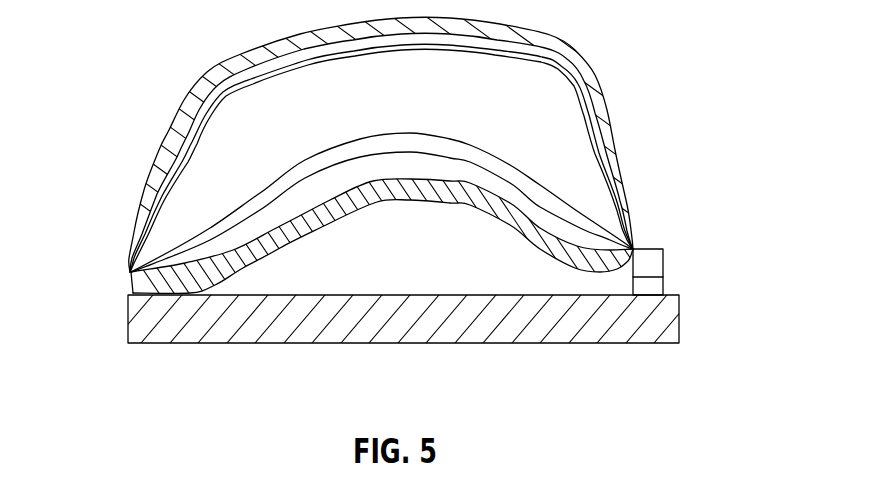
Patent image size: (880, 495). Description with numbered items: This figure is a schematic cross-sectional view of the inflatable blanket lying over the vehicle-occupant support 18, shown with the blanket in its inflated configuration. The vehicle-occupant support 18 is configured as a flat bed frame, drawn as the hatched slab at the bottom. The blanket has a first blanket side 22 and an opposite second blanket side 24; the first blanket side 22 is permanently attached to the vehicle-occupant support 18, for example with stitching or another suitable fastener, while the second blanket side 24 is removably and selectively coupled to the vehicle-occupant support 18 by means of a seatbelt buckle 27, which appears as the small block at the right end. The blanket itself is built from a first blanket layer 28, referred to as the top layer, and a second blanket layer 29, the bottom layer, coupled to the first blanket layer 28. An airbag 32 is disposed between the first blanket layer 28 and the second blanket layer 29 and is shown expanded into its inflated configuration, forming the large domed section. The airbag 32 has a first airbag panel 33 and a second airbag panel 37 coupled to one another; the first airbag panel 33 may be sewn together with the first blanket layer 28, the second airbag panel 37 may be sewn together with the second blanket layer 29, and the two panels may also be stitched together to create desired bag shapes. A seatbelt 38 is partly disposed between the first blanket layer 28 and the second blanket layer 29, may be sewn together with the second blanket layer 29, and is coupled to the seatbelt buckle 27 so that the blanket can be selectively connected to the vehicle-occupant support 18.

The vehicle-occupant support 18 is at (128, 318).
The first blanket side 22 is at (135, 288).
The second blanket side 24 is at (645, 219).
The seatbelt buckle 27 is at (676, 267).
The first blanket layer 28 is at (240, 62).
The second blanket layer 29 is at (458, 201).
The airbag 32 is at (189, 146).
The first airbag panel 33 is at (578, 70).
The second airbag panel 37 is at (382, 190).
The seatbelt 38 is at (397, 153).